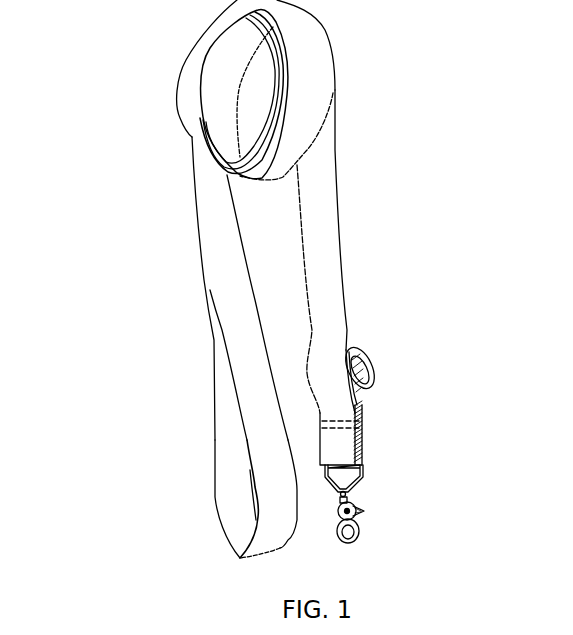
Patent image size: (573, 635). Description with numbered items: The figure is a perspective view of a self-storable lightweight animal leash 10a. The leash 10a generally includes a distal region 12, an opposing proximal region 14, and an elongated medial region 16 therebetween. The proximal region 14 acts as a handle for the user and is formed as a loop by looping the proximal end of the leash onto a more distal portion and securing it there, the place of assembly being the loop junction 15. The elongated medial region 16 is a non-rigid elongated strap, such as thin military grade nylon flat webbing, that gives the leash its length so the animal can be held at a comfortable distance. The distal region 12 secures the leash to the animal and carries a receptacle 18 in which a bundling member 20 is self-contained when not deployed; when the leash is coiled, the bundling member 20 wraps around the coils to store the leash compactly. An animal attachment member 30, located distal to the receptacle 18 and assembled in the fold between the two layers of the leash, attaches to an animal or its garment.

The self-storable animal leash 10a is at (266, 279).
The distal region 12 is at (430, 430).
The proximal region 14 is at (184, 408).
The loop junction 15 is at (208, 228).
The elongated medial region 16 is at (335, 177).
The receptacle 18 is at (367, 393).
The bundling member 20 is at (386, 334).
The animal attachment member 30 is at (362, 513).